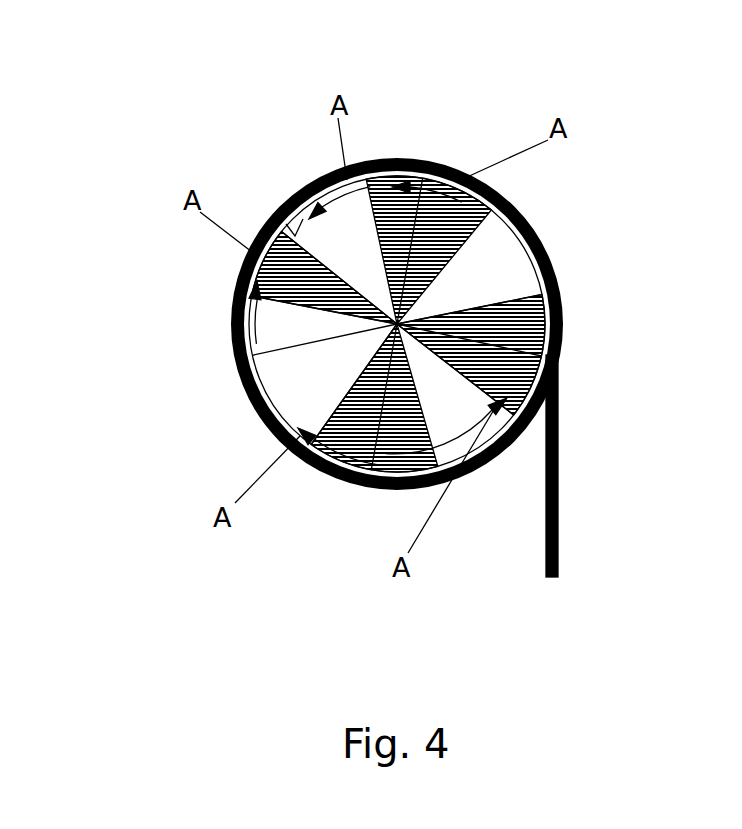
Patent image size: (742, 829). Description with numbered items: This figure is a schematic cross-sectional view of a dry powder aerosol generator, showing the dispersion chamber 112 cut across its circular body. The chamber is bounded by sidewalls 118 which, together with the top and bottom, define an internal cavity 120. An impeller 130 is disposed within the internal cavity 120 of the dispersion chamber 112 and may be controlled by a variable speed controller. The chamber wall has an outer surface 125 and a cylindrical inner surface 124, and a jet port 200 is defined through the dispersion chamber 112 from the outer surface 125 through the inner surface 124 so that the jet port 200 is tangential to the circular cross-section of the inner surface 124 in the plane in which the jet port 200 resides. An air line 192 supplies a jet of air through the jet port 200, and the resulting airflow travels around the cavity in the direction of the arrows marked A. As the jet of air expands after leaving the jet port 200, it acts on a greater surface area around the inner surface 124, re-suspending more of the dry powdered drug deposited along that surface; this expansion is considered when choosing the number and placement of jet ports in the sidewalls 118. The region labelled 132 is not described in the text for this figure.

The dispersion chamber 112 is at (402, 157).
The sidewalls 118 is at (232, 271).
The internal cavity 120 is at (478, 281).
The inner surface 124 is at (296, 222).
The outer surface 125 is at (540, 238).
The impeller 130 is at (331, 406).
The open sector 132 is at (275, 327).
The air line 192 is at (559, 474).
The jet port 200 is at (565, 328).